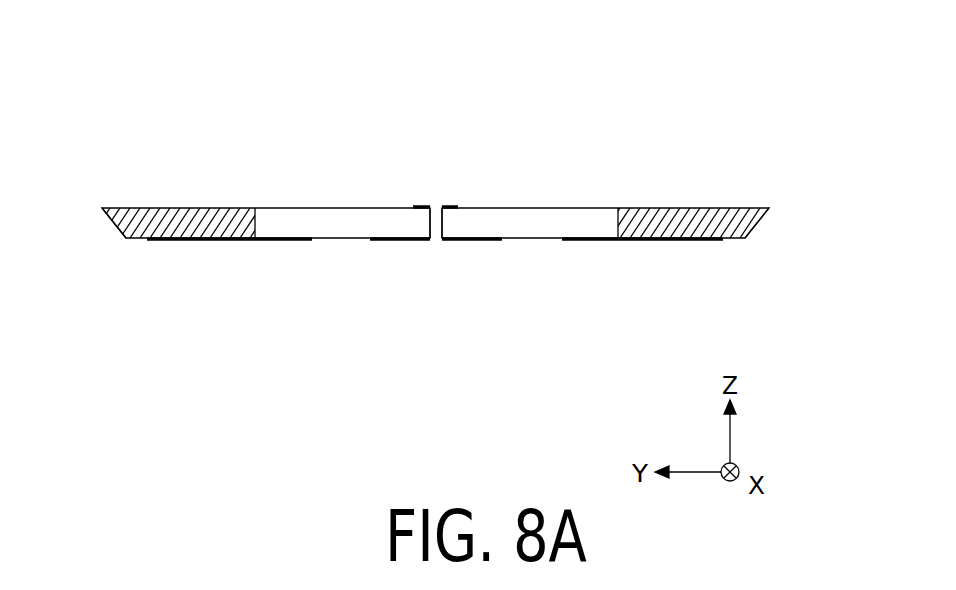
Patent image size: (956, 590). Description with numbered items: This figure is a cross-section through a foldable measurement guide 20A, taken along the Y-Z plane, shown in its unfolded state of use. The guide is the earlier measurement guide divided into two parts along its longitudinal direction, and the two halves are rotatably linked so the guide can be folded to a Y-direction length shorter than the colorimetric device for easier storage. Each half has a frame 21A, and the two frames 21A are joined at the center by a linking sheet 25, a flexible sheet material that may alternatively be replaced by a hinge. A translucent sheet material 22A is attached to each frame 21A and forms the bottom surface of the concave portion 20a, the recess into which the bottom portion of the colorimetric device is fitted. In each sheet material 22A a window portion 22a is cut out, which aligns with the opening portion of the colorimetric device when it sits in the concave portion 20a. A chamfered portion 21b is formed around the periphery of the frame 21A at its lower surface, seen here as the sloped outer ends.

The foldable measurement guide 20A is at (433, 107).
The concave portion 20a is at (291, 230).
The frame 21A is at (118, 208).
The chamfered portion 21b is at (110, 227).
The sheet material 22A is at (220, 241).
The window portion 22a is at (339, 243).
The linking sheet 25 is at (447, 205).